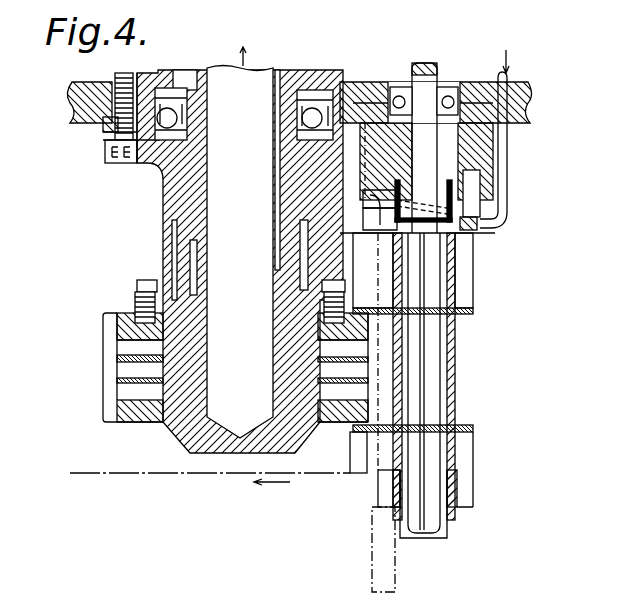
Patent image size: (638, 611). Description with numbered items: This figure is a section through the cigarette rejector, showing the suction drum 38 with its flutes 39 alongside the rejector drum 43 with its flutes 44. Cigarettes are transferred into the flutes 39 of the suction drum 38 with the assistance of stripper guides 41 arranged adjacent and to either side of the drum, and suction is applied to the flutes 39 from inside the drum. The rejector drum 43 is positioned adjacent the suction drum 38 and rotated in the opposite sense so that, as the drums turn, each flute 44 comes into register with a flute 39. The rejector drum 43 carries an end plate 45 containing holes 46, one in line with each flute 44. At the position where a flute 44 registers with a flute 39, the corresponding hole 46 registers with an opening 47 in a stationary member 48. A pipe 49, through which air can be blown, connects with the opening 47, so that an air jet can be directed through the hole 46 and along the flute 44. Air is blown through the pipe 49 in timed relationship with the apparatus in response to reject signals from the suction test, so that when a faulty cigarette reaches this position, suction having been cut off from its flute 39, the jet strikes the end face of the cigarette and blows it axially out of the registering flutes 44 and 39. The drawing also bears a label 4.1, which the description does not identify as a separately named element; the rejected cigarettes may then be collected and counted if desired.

The suction drum 38 is at (130, 423).
The flutes 39 is at (107, 370).
The stripper guides 41 is at (473, 428).
The upper ring 4.1 is at (475, 312).
The rejector drum 43 is at (397, 490).
The flutes 44 is at (468, 387).
The end plate 45 is at (487, 240).
The holes 46 is at (470, 240).
The opening 47 is at (363, 228).
The stationary member 48 is at (363, 193).
The pipe 49 is at (508, 168).